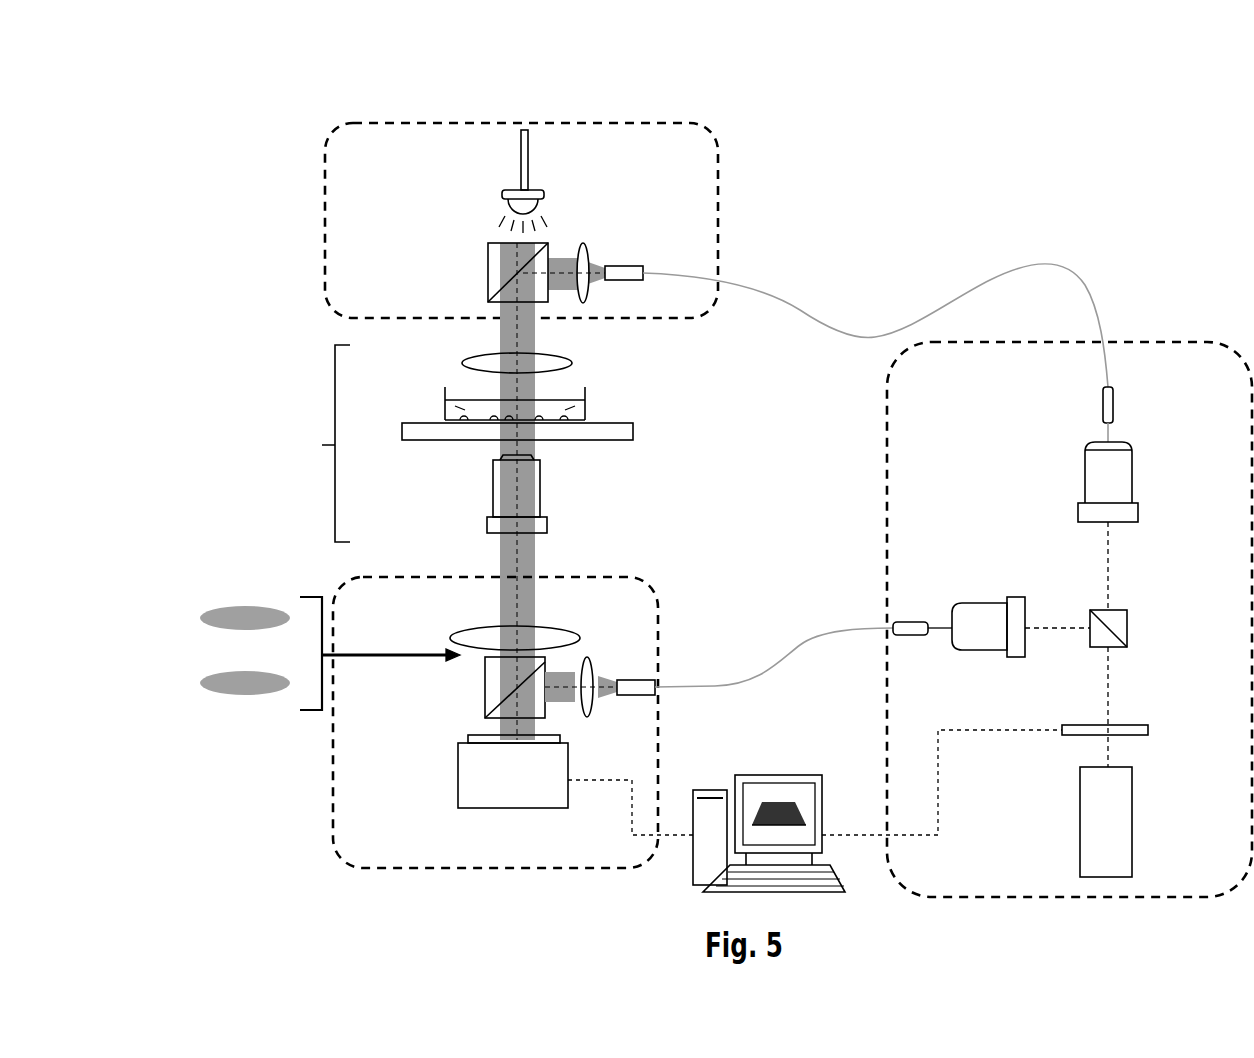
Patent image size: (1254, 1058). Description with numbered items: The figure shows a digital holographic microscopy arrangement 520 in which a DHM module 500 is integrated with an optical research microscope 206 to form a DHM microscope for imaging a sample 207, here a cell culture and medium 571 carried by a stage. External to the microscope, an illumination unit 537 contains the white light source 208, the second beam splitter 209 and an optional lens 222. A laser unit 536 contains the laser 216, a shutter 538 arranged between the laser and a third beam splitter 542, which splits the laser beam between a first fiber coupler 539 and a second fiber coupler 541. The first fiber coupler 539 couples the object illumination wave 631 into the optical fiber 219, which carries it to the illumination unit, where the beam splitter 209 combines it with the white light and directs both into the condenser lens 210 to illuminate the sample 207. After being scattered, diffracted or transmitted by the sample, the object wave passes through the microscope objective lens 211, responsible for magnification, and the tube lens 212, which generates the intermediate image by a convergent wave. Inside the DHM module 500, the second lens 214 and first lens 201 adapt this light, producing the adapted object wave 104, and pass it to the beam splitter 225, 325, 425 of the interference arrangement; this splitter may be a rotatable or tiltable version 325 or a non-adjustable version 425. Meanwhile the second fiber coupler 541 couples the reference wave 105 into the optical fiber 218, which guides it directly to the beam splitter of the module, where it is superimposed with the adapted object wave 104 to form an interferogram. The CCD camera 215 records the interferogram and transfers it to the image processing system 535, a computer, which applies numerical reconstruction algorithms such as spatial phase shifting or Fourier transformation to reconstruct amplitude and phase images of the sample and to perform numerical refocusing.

The digital holographic microscopy arrangement 520 is at (1083, 120).
The illumination unit 537 is at (327, 208).
The white light source 208 is at (513, 162).
The beam splitter 209 is at (548, 243).
The object illumination wave 631 is at (560, 273).
The lens 222 is at (587, 245).
The optical fiber 219 is at (845, 330).
The laser unit 536 is at (1137, 342).
The first fiber coupler 539 is at (1125, 477).
The condenser lens 210 is at (475, 358).
The sample 207 is at (479, 390).
The cell culture and medium 571 is at (577, 410).
The microscope 206 is at (299, 443).
The microscope objective lens 211 is at (540, 495).
The tube lens 212 is at (555, 628).
The DHM module 500 is at (357, 585).
The adapted object wave 104 is at (515, 618).
The second lens 214 is at (233, 607).
The first lens 201 is at (210, 687).
The beam splitter 225 is at (347, 716).
The rotatable or tiltable beam splitter 325 is at (382, 716).
The beam splitter 425 is at (483, 695).
The reference wave 105 is at (557, 687).
The CCD camera 215 is at (473, 738).
The optical fiber 218 is at (718, 682).
The image processing system 535 is at (707, 790).
The second fiber coupler 541 is at (952, 613).
The third beam splitter 542 is at (1125, 628).
The shutter 538 is at (1132, 723).
The laser 216 is at (1132, 833).